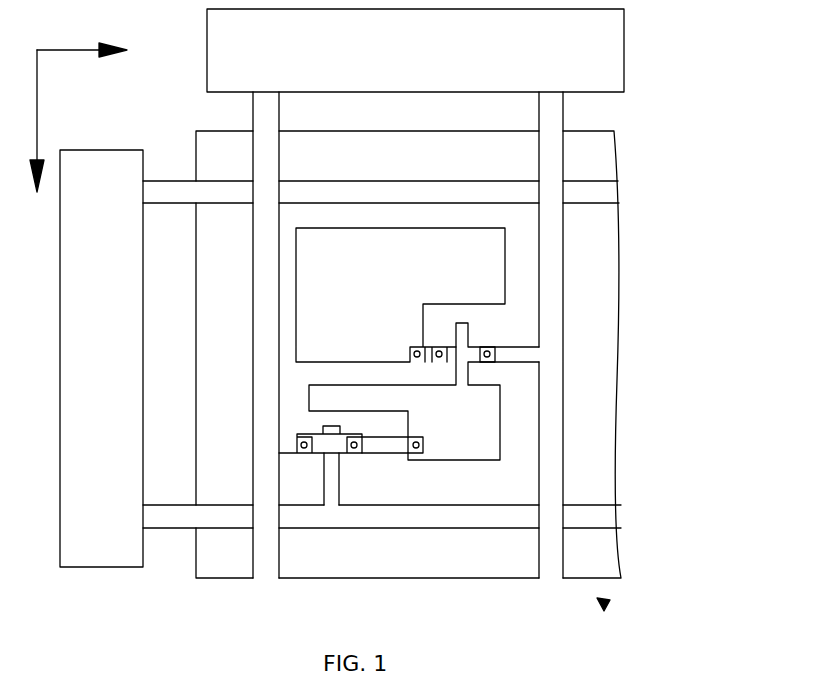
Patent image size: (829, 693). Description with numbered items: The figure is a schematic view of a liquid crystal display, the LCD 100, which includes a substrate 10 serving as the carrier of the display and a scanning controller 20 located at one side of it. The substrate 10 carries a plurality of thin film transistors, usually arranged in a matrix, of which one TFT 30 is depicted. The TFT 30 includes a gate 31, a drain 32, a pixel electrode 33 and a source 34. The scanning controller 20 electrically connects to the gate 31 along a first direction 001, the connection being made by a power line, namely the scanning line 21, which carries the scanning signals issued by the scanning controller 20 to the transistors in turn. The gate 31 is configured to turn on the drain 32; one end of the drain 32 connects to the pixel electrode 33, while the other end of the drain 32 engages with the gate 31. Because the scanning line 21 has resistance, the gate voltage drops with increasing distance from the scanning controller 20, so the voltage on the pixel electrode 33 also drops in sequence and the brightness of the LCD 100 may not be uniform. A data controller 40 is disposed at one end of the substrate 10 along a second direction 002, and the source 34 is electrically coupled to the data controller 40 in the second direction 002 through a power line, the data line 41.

The substrate 10 is at (598, 400).
The scanning controller 20 is at (108, 557).
The scanning line 21 is at (217, 518).
The TFT 30 is at (523, 247).
The gate 31 is at (332, 448).
The drain 32 is at (386, 445).
The pixel electrode 33 is at (465, 437).
The source 34 is at (292, 443).
The data controller 40 is at (590, 60).
The data line 41 is at (266, 118).
The first direction 001 is at (82, 37).
The second direction 002 is at (43, 136).
The LCD 100 is at (605, 605).